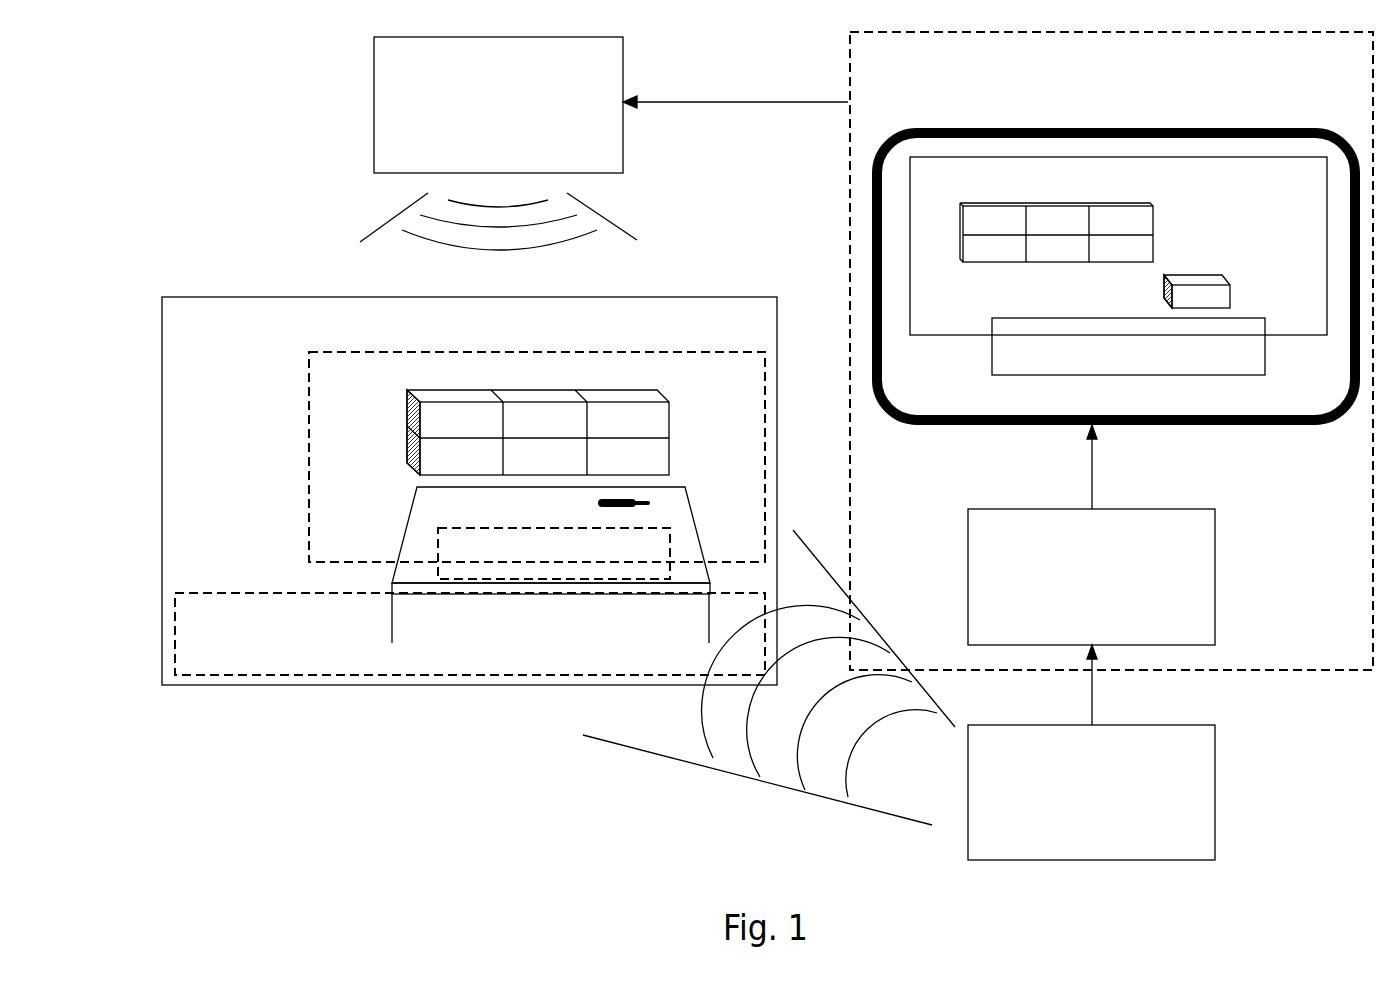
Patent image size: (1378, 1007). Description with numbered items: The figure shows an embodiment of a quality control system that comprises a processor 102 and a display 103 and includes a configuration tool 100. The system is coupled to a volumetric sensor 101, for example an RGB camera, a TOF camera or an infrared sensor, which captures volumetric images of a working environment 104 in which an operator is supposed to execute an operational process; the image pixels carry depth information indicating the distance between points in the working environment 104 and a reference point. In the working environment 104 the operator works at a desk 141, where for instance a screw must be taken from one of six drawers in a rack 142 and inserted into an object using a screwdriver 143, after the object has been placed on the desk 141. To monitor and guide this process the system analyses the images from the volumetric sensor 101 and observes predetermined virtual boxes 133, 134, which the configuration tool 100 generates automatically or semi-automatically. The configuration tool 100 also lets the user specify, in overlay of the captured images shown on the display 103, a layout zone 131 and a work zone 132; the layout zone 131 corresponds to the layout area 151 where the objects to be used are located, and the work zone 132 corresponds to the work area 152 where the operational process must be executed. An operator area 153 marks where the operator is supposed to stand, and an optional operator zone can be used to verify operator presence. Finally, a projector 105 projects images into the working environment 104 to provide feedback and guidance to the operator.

The configuration tool 100 is at (848, 62).
The volumetric sensor 101 is at (1215, 790).
The processor 102 is at (1215, 566).
The display 103 is at (907, 128).
The working environment 104 is at (309, 297).
The projector 105 is at (623, 60).
The layout zone 131 is at (910, 224).
The work zone 132 is at (992, 363).
The virtual box 133 is at (1205, 275).
The virtual box 134 is at (1018, 263).
The desk 141 is at (405, 530).
The rack 142 is at (407, 415).
The screwdriver 143 is at (600, 503).
The layout area 151 is at (309, 397).
The work area 152 is at (670, 541).
The operator area 153 is at (210, 593).